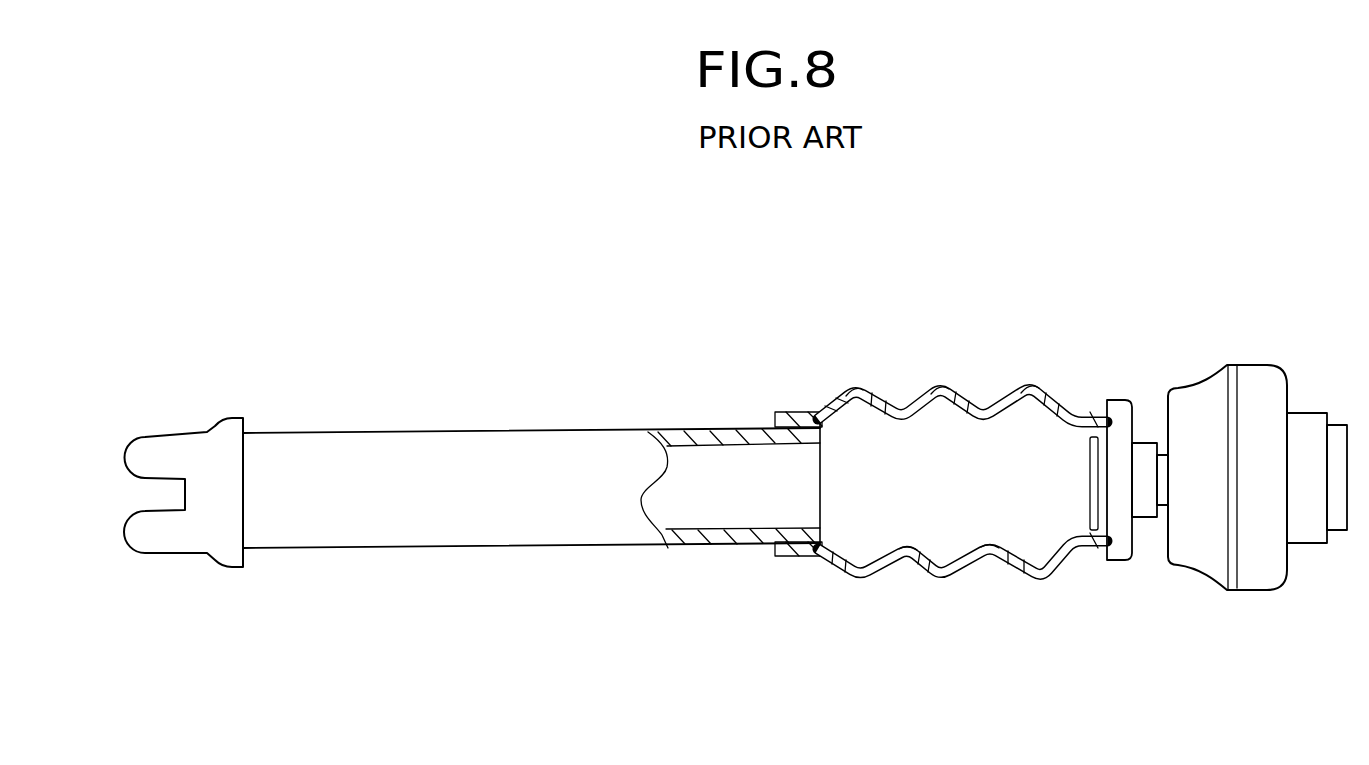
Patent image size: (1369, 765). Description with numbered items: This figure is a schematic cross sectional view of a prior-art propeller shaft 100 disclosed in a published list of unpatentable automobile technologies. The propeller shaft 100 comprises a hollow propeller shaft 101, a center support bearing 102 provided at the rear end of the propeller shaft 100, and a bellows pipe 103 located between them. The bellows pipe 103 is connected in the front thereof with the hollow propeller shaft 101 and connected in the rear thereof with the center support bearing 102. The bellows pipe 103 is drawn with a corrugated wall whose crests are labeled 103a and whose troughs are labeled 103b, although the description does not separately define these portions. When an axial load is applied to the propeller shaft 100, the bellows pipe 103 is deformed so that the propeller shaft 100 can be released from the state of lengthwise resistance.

The propeller shaft 100 is at (956, 425).
The hollow propeller shaft 101 is at (682, 419).
The center support bearing 102 is at (1258, 341).
The bellows pipe 103 is at (926, 366).
The peak portion of bellows 103a is at (858, 387).
The valley portion of bellows 103b is at (911, 557).